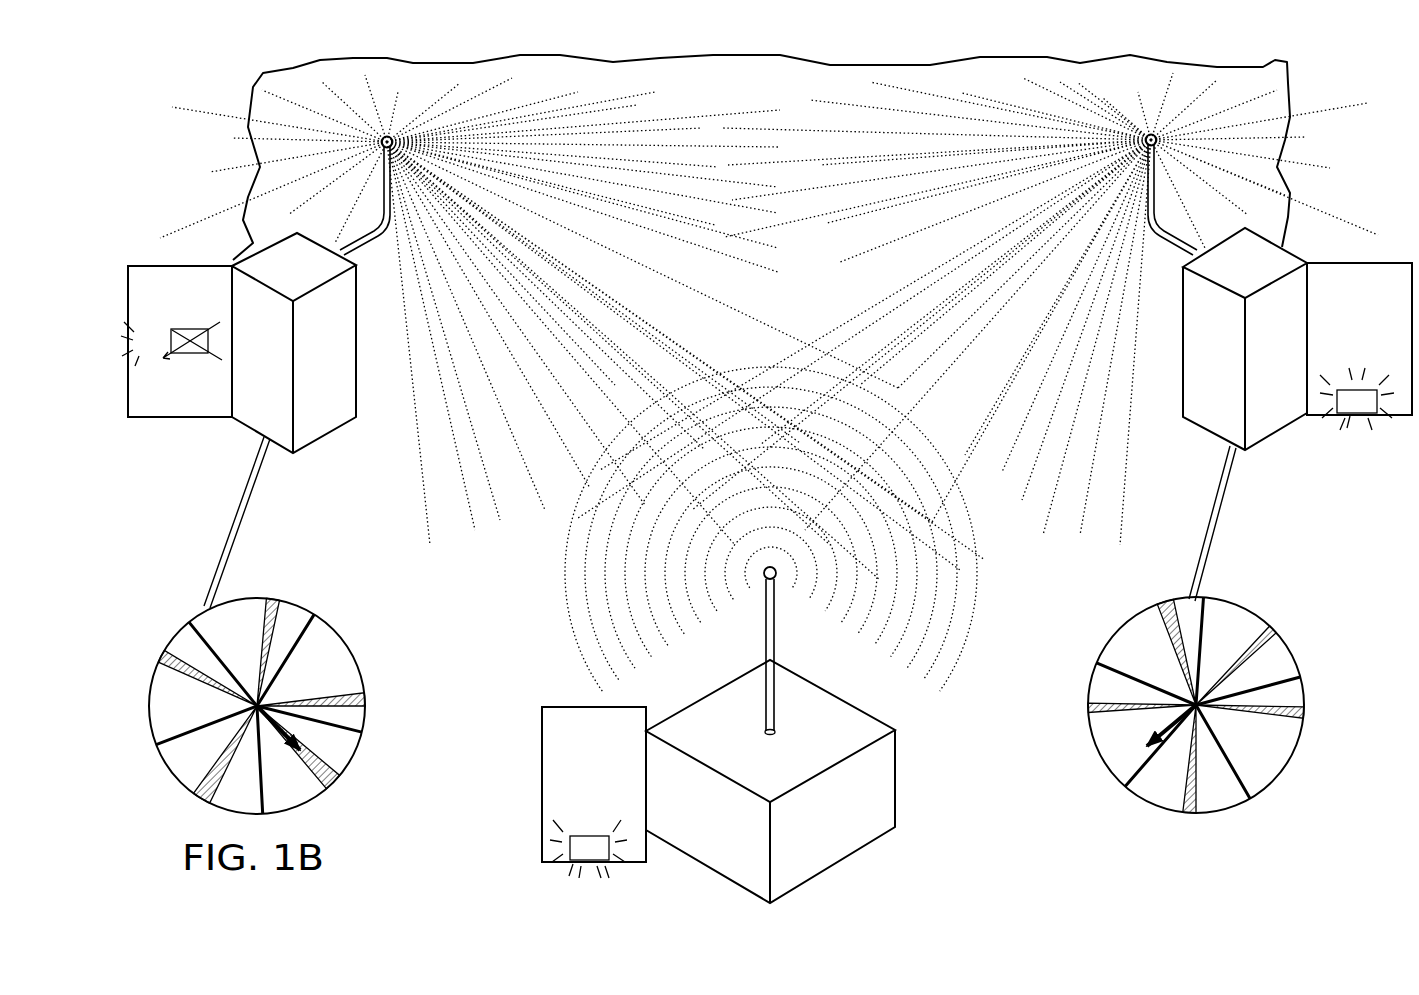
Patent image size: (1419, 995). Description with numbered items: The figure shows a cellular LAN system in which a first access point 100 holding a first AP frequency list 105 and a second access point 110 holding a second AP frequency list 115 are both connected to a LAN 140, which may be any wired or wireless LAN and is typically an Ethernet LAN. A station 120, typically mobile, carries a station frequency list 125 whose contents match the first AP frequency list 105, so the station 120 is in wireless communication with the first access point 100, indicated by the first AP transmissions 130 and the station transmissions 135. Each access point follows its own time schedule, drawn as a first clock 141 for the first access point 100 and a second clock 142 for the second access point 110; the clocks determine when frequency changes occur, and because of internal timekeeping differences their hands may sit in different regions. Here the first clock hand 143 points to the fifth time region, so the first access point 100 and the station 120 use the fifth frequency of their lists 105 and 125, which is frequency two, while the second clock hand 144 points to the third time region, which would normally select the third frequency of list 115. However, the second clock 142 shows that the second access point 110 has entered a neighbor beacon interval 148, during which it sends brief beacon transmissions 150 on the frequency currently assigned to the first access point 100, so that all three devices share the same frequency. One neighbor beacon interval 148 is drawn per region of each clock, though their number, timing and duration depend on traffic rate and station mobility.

The first access point 100 is at (1258, 451).
The first AP frequency list 105 is at (1380, 416).
The second access point 110 is at (357, 426).
The second AP frequency list 115 is at (138, 420).
The station 120 is at (902, 824).
The station frequency list 125 is at (556, 799).
The first AP transmissions 130 is at (1136, 444).
The station transmissions 135 is at (998, 569).
The LAN 140 is at (1290, 62).
The first clock 141 is at (1228, 591).
The second clock 142 is at (336, 614).
The first clock hand 143 is at (1140, 754).
The second clock hand 144 is at (327, 791).
The neighbor beacon interval 148 is at (277, 597).
The beacon transmissions 150 is at (556, 238).